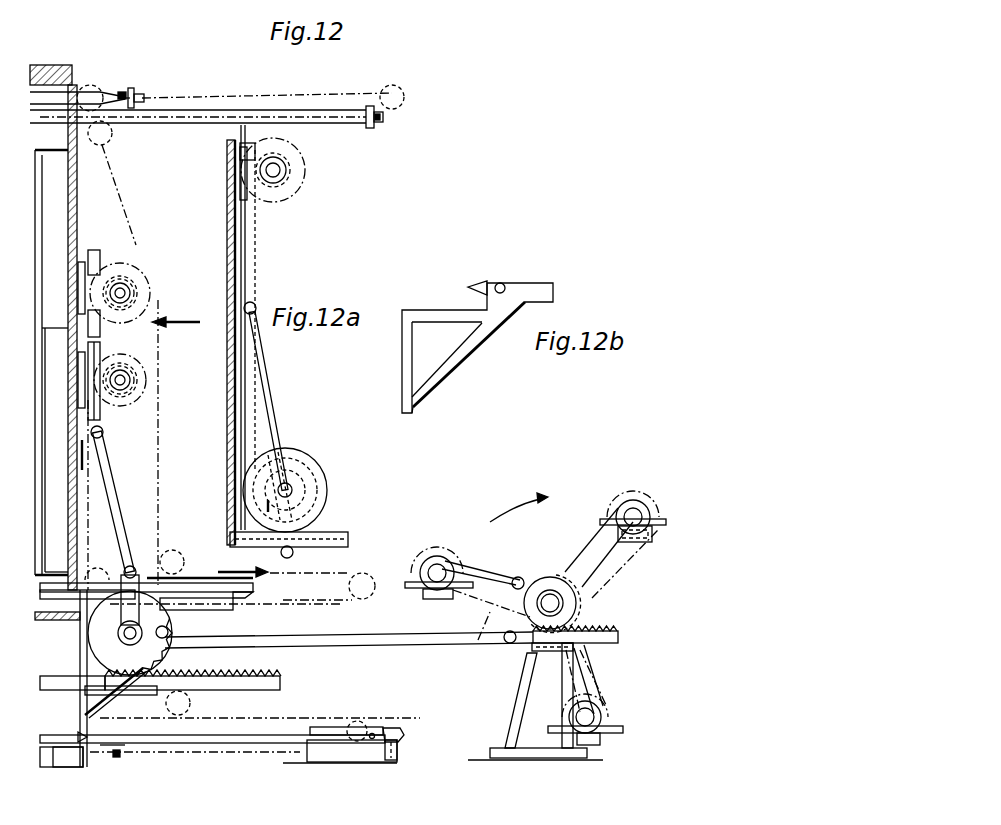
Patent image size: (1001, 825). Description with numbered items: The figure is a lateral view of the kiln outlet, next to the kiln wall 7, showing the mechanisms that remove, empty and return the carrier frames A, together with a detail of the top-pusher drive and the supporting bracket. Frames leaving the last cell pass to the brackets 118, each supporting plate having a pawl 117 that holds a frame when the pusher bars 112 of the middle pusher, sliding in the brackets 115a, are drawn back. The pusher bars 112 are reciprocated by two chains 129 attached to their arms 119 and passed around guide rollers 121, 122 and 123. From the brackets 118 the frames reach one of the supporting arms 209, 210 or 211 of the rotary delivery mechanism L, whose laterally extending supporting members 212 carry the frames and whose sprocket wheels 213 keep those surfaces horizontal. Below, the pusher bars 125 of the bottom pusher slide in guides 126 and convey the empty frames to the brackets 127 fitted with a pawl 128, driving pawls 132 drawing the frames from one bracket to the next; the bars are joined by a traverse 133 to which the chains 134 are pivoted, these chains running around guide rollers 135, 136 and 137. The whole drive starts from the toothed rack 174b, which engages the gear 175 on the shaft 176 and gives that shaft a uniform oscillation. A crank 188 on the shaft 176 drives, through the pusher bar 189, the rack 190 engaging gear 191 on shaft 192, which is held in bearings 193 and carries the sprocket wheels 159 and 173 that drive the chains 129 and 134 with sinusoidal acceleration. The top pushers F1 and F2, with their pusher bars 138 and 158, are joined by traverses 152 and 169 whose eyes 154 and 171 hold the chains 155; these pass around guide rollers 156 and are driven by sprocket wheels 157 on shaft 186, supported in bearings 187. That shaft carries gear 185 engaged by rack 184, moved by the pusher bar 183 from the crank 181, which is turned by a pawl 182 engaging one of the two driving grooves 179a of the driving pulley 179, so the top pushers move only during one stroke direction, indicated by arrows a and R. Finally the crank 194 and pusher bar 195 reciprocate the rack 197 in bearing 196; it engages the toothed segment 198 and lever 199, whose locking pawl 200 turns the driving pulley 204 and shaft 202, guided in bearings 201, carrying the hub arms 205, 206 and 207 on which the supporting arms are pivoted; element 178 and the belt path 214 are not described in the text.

In FIG. 12, the housing wall 7 is at (51, 362).
In FIG. 12, the pusher bars 112 is at (254, 588).
In FIG. 12, the brackets 115a is at (232, 612).
In FIG. 12B, the pawl 117 is at (478, 283).
In FIG. 12B, the brackets 118 is at (466, 365).
In FIG. 12, the arms 119 is at (90, 626).
In FIG. 12, the guide roller 121 is at (108, 563).
In FIG. 12, the guide roller 122 is at (170, 553).
In FIG. 12, the guide roller 123 is at (362, 572).
In FIG. 12, the pusher bars 125 is at (205, 742).
In FIG. 12, the guides 126 is at (70, 760).
In FIG. 12, the brackets 127 is at (42, 768).
In FIG. 12, the pawl 128 is at (402, 733).
In FIG. 12, the chains 129 is at (150, 452).
In FIG. 12, the driving pawls 132 is at (263, 727).
In FIG. 12, the traverse 133 is at (124, 752).
In FIG. 12, the chains 134 is at (254, 526).
In FIG. 12, the guide roller 135 is at (103, 754).
In FIG. 12, the guide roller 136 is at (354, 724).
In FIG. 12, the guide roller 137 is at (190, 708).
In FIG. 12, the pusher bars 138 is at (112, 90).
In FIG. 12, the traverse 152 is at (135, 88).
In FIG. 12, the eyes 154 is at (143, 94).
In FIG. 12, the chains 155 is at (245, 94).
In FIG. 12A, the chains 155 is at (293, 128).
In FIG. 12, the guide rollers 156 is at (100, 86).
In FIG. 12, the sprocket wheels 157 is at (86, 272).
In FIG. 12A, the sprocket wheels 157 is at (303, 177).
In FIG. 12, the pusher bars 158 is at (205, 124).
In FIG. 12, the sprocket wheels 159 is at (156, 430).
In FIG. 12, the traverse 169 is at (372, 126).
In FIG. 12, the eyes 171 is at (383, 118).
In FIG. 12, the sprocket wheels 173 is at (157, 396).
In FIG. 12, the rack 174b is at (280, 674).
In FIG. 12A, the rack 174b is at (341, 535).
In FIG. 12, the gear 175 is at (168, 667).
In FIG. 12, the shaft 176 is at (120, 637).
In FIG. 12A, the shaft 176 is at (292, 489).
In FIG. 12, the pawl 178 is at (122, 691).
In FIG. 12A, the driving pulley 179 is at (291, 468).
In FIG. 12A, the driving grooves 179a is at (276, 428).
In FIG. 12A, the crank 181 is at (302, 500).
In FIG. 12A, the pawl 182 is at (306, 517).
In FIG. 12A, the pusher bar 183 is at (269, 377).
In FIG. 12, the rack 184 is at (91, 250).
In FIG. 12A, the rack 184 is at (258, 246).
In FIG. 12, the gear 185 is at (138, 296).
In FIG. 12A, the gear 185 is at (292, 182).
In FIG. 12, the shaft 186 is at (125, 291).
In FIG. 12A, the shaft 186 is at (250, 150).
In FIG. 12, the bearings 187 is at (100, 312).
In FIG. 12A, the bearings 187 is at (245, 193).
In FIG. 12, the crank 188 is at (134, 570).
In FIG. 12, the pusher bar 189 is at (110, 479).
In FIG. 12, the rack 190 is at (104, 430).
In FIG. 12, the gear 191 is at (142, 368).
In FIG. 12, the shaft 192 is at (127, 364).
In FIG. 12, the bearings 193 is at (136, 383).
In FIG. 12, the crank 194 is at (165, 640).
In FIG. 12, the pusher bar 195 is at (388, 648).
In FIG. 12, the bearing 196 is at (530, 648).
In FIG. 12, the rack 197 is at (618, 636).
In FIG. 12, the toothed segment 198 is at (565, 599).
In FIG. 12, the lever 199 is at (527, 597).
In FIG. 12, the locking pawl 200 is at (516, 578).
In FIG. 12, the bearings 201 is at (526, 681).
In FIG. 12, the shaft 202 is at (574, 610).
In FIG. 12, the driving pulley 204 is at (557, 587).
In FIG. 12, the arm 205 is at (468, 562).
In FIG. 12, the arm 206 is at (615, 563).
In FIG. 12, the arm 207 is at (582, 668).
In FIG. 12, the supporting arm 209 is at (427, 598).
In FIG. 12, the supporting arm 210 is at (647, 542).
In FIG. 12, the supporting arm 211 is at (601, 740).
In FIG. 12, the supporting members 212 is at (663, 519).
In FIG. 12, the sprocket wheels 213 is at (621, 499).
In FIG. 12, the belt 214 is at (587, 533).
In FIG. 12, the top pusher F1 is at (101, 91).
In FIG. 12, the top pusher F2 is at (150, 122).
In FIG. 12, the direction arrow a is at (182, 321).
In FIG. 12, the direction arrow R is at (200, 578).
In FIG. 12, the frame A is at (385, 728).
In FIG. 12, the rotary delivery mechanism L is at (519, 501).